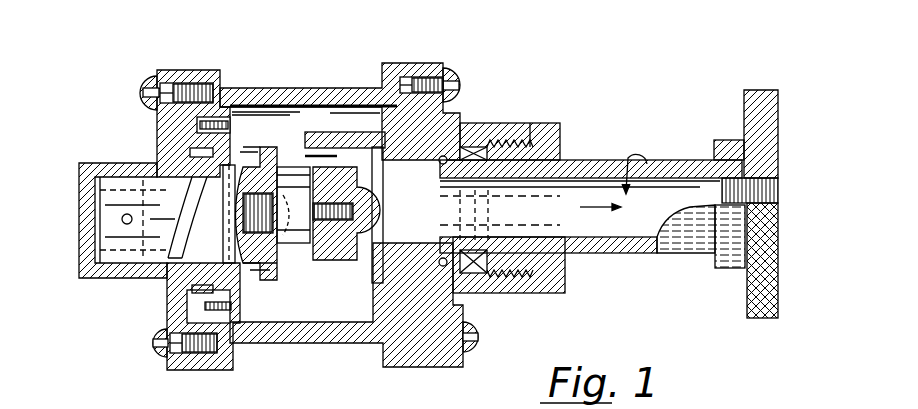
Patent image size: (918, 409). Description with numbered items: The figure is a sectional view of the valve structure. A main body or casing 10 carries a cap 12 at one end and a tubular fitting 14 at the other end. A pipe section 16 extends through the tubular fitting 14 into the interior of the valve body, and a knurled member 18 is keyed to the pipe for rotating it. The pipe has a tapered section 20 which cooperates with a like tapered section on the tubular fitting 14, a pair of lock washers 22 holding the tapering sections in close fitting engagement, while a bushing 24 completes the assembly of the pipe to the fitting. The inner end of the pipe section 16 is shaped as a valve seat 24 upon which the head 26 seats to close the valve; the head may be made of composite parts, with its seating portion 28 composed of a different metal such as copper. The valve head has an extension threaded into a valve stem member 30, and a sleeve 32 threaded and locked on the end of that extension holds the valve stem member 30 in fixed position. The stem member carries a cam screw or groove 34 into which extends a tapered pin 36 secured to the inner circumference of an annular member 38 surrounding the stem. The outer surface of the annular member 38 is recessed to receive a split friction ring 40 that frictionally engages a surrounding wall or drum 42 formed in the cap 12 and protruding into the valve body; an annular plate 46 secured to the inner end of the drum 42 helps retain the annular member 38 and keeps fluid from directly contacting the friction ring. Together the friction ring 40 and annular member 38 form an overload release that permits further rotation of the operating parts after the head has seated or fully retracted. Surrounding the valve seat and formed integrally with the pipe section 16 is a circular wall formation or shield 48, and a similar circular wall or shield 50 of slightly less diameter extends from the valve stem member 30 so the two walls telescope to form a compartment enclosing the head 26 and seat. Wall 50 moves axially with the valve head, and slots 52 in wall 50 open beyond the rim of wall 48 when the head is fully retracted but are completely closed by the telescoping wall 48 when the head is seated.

The main body or casing 10 is at (332, 88).
The cap 12 is at (80, 278).
The tubular fitting 14 is at (497, 125).
The pipe section 16 is at (680, 252).
The knurled member 18 is at (778, 270).
The tapered section 20 is at (440, 265).
The lock washers 22 is at (503, 293).
The bushing / valve seat 24 is at (562, 140).
The valve head 26 is at (291, 250).
The seating portion 28 is at (343, 264).
The valve stem member 30 is at (255, 267).
The sleeve 32 is at (113, 206).
The cam screw or groove 34 is at (167, 288).
The tapered pin 36 is at (185, 180).
The annular member 38 is at (185, 160).
The split friction ring 40 is at (195, 138).
The drum 42 is at (185, 322).
The annular plate 46 is at (240, 147).
The circular wall formation or shield 48 is at (365, 130).
The circular wall formation or shield 50 is at (325, 277).
The slots 52 is at (293, 167).